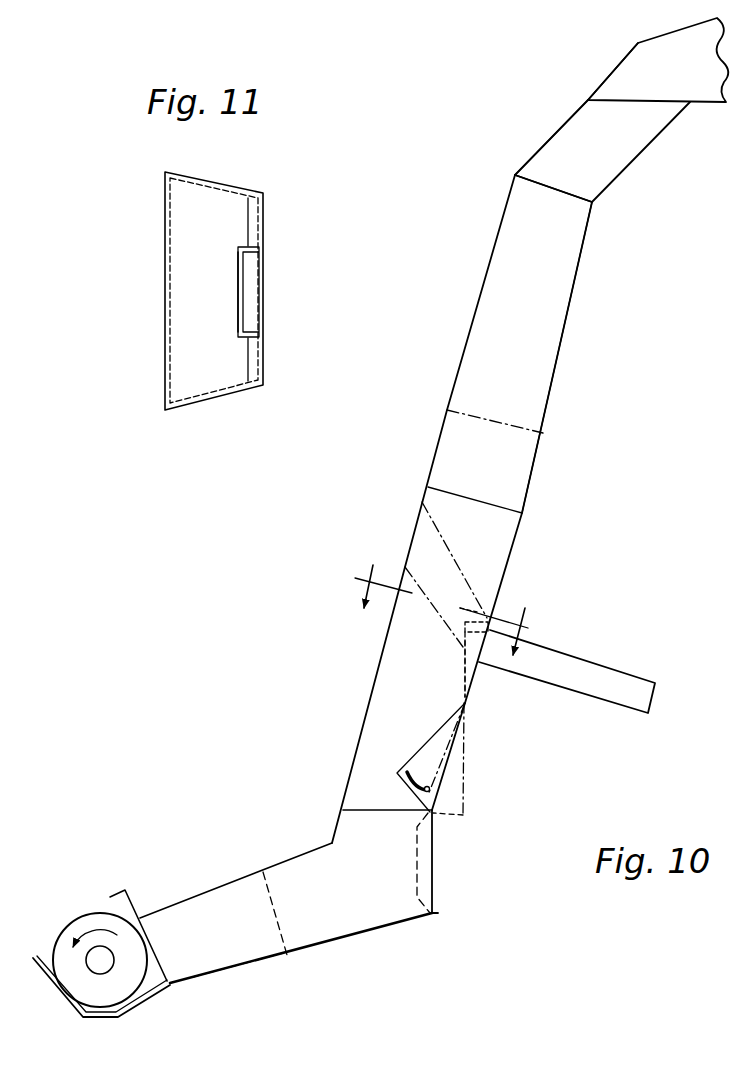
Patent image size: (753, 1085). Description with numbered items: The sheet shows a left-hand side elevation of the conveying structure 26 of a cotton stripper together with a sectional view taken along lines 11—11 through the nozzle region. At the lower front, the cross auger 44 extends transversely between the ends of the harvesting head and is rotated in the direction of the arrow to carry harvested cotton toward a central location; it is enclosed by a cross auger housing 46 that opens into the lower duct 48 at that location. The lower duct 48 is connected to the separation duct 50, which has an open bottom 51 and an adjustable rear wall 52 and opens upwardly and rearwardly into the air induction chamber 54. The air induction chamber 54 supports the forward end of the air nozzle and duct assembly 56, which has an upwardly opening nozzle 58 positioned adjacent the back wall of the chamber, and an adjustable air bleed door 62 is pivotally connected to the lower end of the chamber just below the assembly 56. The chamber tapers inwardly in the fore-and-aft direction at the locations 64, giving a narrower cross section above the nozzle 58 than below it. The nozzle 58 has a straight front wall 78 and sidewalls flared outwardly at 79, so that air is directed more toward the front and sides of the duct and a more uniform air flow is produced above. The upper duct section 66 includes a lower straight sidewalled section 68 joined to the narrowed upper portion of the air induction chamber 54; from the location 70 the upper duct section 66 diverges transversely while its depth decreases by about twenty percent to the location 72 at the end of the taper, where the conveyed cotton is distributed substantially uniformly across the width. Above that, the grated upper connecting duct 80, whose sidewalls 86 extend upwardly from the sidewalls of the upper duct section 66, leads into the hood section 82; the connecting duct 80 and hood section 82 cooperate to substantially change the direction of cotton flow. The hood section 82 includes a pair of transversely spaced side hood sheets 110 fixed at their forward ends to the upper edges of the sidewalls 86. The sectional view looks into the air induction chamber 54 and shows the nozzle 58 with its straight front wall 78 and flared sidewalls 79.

In FIG. 10, the conveying structure 26 is at (240, 745).
In FIG. 10, the cross auger 44 is at (89, 914).
In FIG. 10, the cross auger housing 46 is at (148, 995).
In FIG. 10, the lower duct 48 is at (195, 890).
In FIG. 10, the separation duct 50 is at (310, 850).
In FIG. 10, the open bottom 51 is at (365, 935).
In FIG. 10, the adjustable rear wall 52 is at (432, 858).
In FIG. 11, the air induction chamber 54 is at (167, 288).
In FIG. 10, the air induction chamber 54 is at (357, 750).
In FIG. 10, the air nozzle and duct assembly 56 is at (505, 689).
In FIG. 11, the nozzle 58 is at (262, 266).
In FIG. 10, the nozzle 58 is at (462, 643).
In FIG. 10, the adjustable air bleed door 62 is at (440, 778).
In FIG. 10, the taper locations 64 is at (427, 558).
In FIG. 10, the upper duct section 66 is at (540, 318).
In FIG. 10, the lower straight sidewalled section 68 is at (507, 467).
In FIG. 10, the divergence location 70 is at (543, 433).
In FIG. 10, the taper end location 72 is at (515, 175).
In FIG. 11, the front wall 78 is at (238, 287).
In FIG. 10, the front wall 78 is at (465, 623).
In FIG. 11, the flared sidewalls 79 is at (264, 223).
In FIG. 10, the flared sidewalls 79 is at (483, 612).
In FIG. 10, the grated upper connecting duct 80 is at (542, 130).
In FIG. 10, the hood section 82 is at (617, 52).
In FIG. 10, the sidewalls 86 is at (624, 144).
In FIG. 10, the side hood sheets 110 is at (688, 77).
In FIG. 10, the section line 11 is at (454, 604).